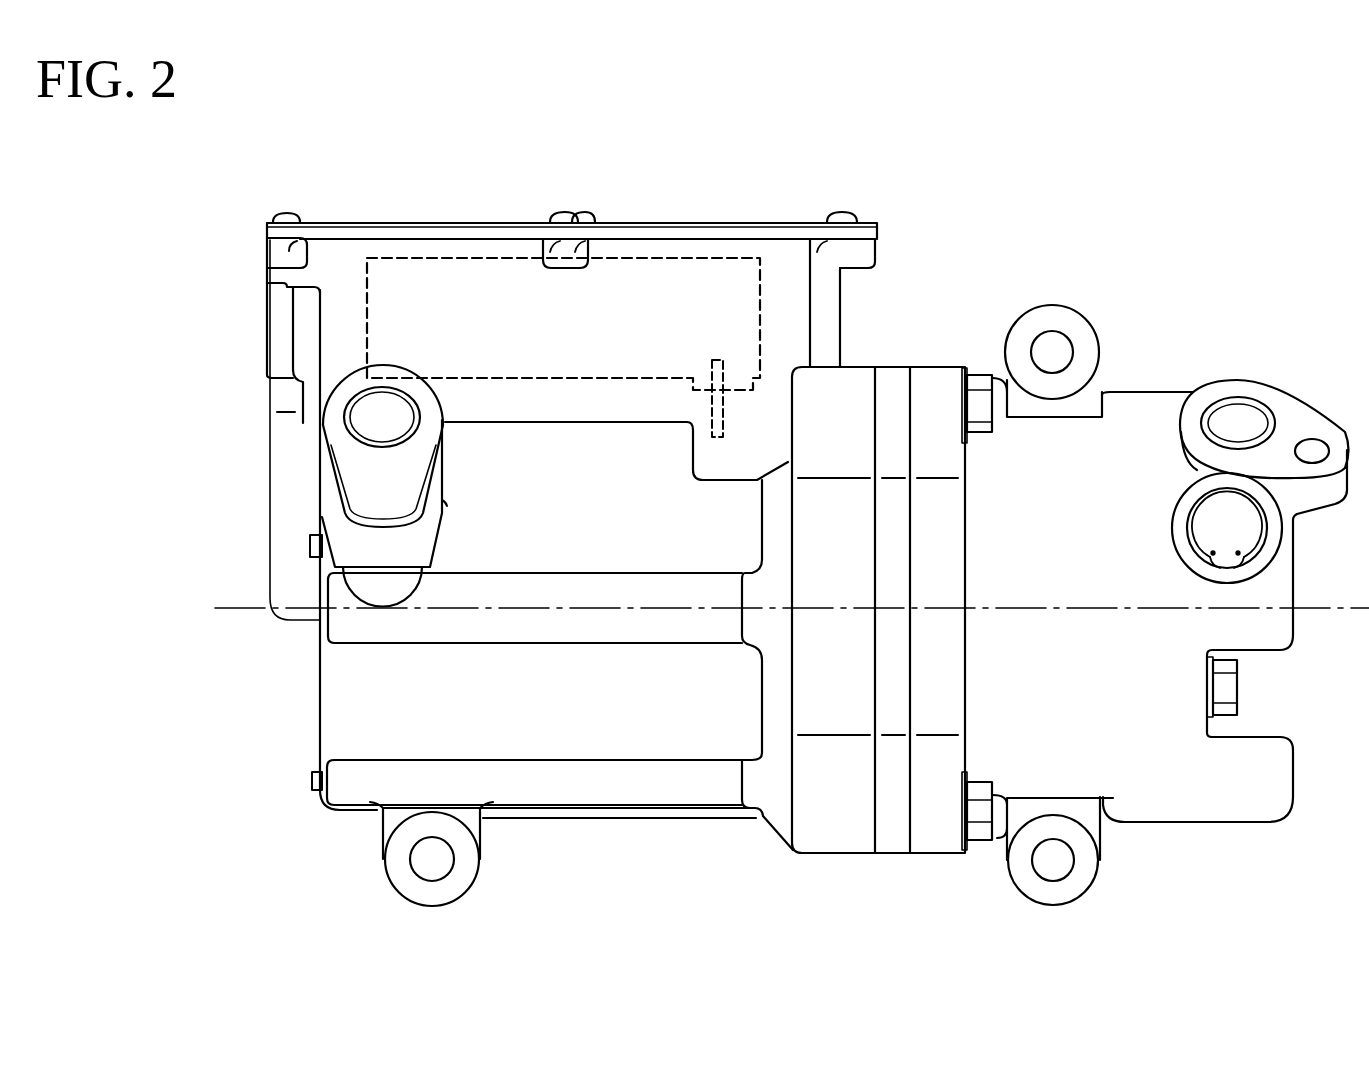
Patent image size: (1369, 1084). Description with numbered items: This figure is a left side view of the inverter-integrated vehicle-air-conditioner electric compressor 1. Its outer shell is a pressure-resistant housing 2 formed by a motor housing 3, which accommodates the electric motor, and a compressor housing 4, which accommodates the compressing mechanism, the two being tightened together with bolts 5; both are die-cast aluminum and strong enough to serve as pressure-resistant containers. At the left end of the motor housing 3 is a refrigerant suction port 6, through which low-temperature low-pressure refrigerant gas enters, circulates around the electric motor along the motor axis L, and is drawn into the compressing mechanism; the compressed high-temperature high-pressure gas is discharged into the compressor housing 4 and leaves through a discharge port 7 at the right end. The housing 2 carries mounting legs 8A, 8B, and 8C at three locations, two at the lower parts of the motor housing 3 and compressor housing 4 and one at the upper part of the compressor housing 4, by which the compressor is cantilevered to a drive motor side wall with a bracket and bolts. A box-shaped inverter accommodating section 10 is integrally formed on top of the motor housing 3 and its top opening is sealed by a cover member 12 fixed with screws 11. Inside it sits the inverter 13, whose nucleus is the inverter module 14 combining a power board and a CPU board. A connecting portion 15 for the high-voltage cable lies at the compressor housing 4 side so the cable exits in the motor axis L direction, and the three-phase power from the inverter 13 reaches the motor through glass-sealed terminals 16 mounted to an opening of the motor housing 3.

The vehicle-air-conditioner electric compressor 1 is at (1122, 197).
The housing 2 is at (703, 819).
The motor housing 3 is at (353, 683).
The compressor housing 4 is at (1198, 778).
The bolts 5 is at (983, 827).
The refrigerant suction port 6 is at (378, 422).
The discharge port 7 is at (1253, 417).
The mounting leg 8A is at (1080, 882).
The mounting leg 8B is at (435, 867).
The mounting leg 8C is at (1085, 343).
The inverter accommodating section 10 is at (340, 310).
The screws 11 is at (293, 212).
The cover member 12 is at (453, 218).
The inverter 13 is at (708, 262).
The inverter module 14 is at (660, 256).
The connecting portion 15 is at (842, 308).
The glass-sealed terminals 16 is at (690, 385).
The motor axis L is at (1090, 601).